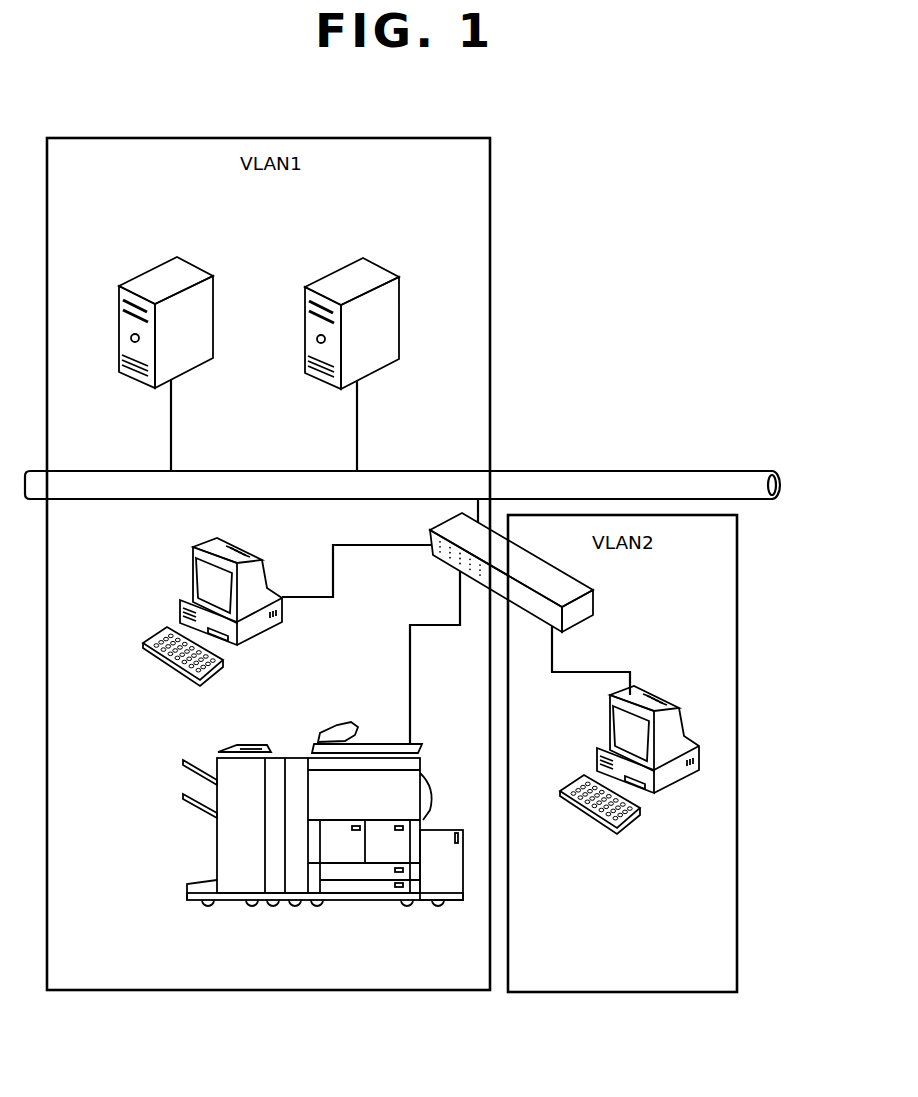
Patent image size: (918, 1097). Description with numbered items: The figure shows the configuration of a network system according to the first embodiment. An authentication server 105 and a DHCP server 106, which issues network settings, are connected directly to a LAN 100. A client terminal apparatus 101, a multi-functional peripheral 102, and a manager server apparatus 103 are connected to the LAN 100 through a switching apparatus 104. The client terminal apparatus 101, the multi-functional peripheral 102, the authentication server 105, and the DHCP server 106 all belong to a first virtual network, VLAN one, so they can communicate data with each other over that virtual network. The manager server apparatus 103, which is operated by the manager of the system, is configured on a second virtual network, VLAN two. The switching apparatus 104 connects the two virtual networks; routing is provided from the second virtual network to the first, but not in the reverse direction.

The LAN 100 is at (675, 472).
The client terminal apparatus 101 is at (190, 594).
The multi-functional peripheral 102 is at (217, 843).
The manager server apparatus 103 is at (668, 792).
The switching apparatus 104 is at (593, 600).
The authentication server 105 is at (147, 268).
The DHCP server 106 is at (345, 302).